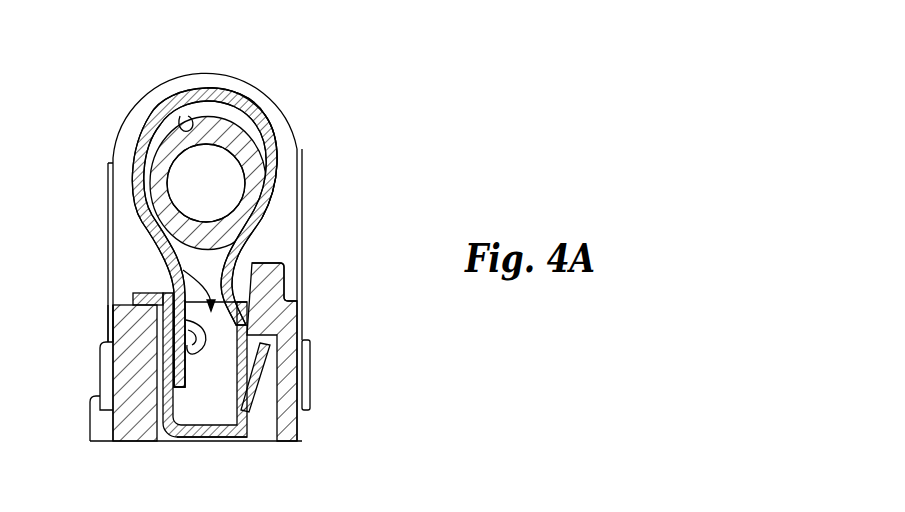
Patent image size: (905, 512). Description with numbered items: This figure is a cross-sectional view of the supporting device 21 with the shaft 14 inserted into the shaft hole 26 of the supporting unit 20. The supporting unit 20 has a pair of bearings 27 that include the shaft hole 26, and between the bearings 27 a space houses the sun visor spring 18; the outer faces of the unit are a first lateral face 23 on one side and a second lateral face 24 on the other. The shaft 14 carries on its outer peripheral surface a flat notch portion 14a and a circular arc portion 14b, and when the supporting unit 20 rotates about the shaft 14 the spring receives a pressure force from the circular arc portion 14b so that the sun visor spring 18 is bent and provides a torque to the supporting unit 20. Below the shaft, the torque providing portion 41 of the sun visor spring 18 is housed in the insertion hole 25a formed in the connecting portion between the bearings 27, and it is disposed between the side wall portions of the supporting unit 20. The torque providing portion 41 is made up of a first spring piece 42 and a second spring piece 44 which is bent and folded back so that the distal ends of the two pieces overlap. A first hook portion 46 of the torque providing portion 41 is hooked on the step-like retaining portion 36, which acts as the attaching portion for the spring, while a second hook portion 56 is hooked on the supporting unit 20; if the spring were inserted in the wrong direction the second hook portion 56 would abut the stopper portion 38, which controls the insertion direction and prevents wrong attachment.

The sun visor spring 18 is at (229, 91).
The bearings 27 is at (120, 143).
The shaft 14 is at (243, 138).
The notch portion 14a is at (165, 176).
The circular arc portion 14b is at (230, 100).
The shaft hole 26 is at (182, 127).
The insertion hole 25a is at (173, 288).
The second spring piece 44 is at (193, 437).
The supporting device 21 is at (235, 473).
The first spring piece 42 is at (172, 293).
The second hook portion 56 is at (160, 302).
The first lateral face 23 is at (108, 317).
The supporting unit 20 is at (125, 358).
The torque providing portion 41 is at (135, 413).
The second lateral face 24 is at (298, 333).
The stopper portion 38 is at (266, 264).
The retaining portion 36 is at (285, 315).
The first hook portion 46 is at (262, 368).